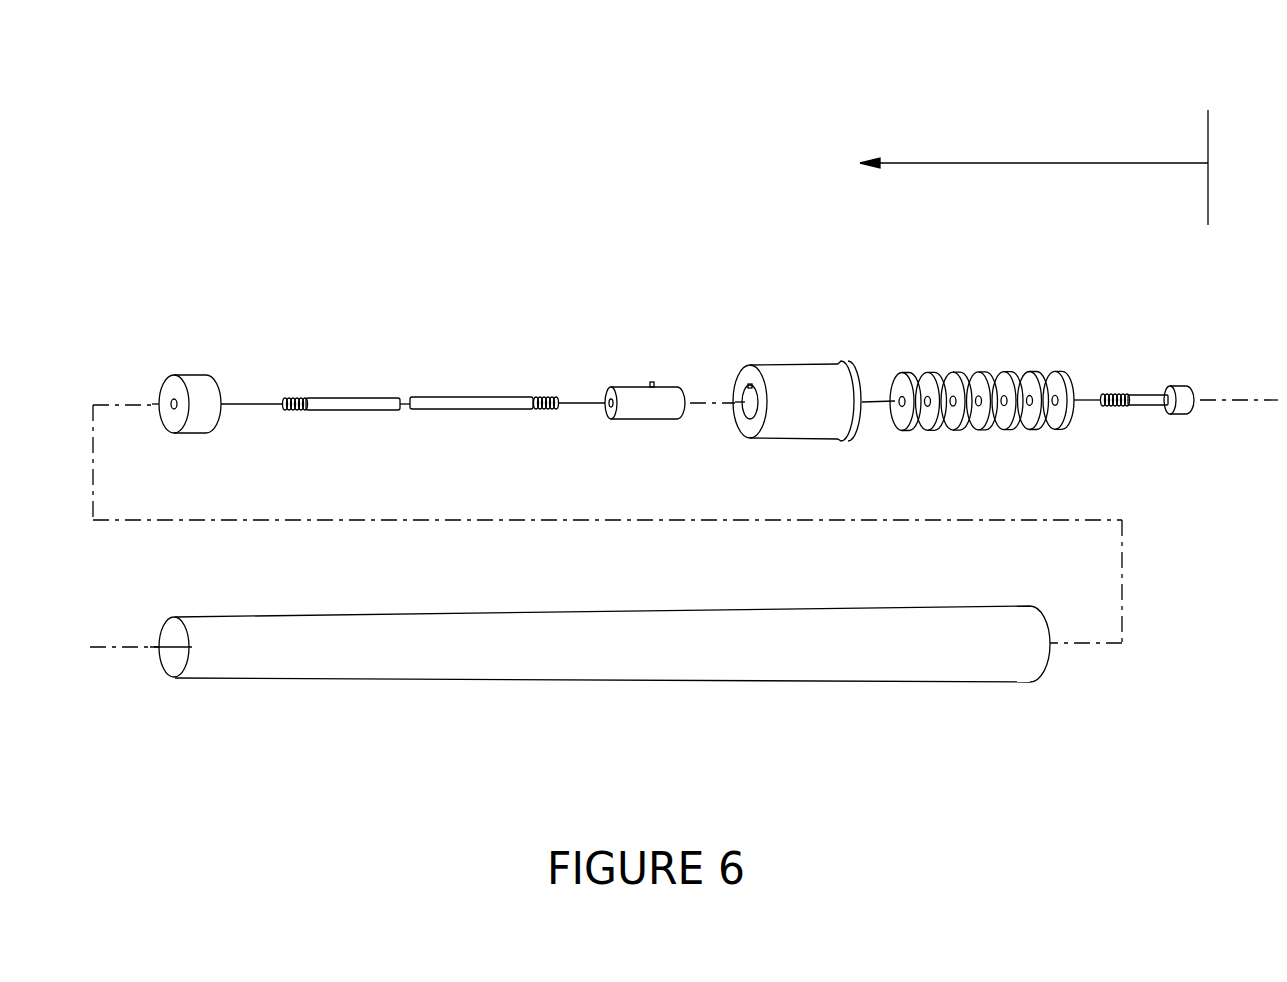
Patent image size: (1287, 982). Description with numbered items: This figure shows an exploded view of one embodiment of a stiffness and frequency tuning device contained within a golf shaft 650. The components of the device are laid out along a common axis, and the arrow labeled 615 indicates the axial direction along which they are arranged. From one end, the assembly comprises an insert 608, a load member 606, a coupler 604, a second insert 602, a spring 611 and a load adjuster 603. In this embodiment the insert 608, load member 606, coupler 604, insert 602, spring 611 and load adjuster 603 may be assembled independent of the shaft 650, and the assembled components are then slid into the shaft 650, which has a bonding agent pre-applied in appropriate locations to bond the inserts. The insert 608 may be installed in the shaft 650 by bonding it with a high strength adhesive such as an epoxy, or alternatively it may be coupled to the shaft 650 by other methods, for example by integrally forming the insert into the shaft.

The insert 602 is at (800, 363).
The load adjuster 603 is at (1138, 388).
The coupler 604 is at (637, 384).
The load member 606 is at (437, 395).
The insert 608 is at (196, 366).
The spring 611 is at (983, 355).
The axial direction 615 is at (1022, 115).
The shaft 650 is at (562, 682).